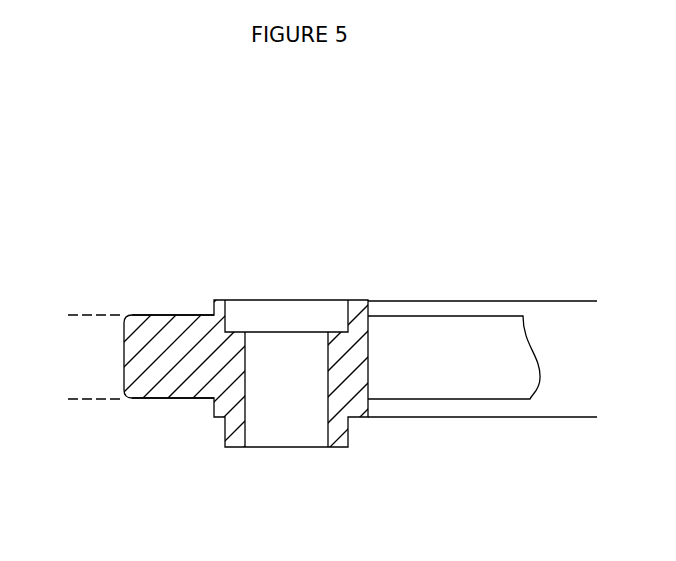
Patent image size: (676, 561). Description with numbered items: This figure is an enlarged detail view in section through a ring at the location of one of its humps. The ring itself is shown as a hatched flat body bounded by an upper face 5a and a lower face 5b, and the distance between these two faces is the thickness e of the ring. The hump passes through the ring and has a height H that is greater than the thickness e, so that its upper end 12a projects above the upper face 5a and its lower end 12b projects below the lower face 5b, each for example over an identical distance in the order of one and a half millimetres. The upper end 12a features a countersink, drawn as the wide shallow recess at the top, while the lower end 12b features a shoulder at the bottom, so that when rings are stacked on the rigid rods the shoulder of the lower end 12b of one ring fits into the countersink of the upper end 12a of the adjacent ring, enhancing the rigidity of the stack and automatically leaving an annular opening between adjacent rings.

The upper face 5a is at (170, 316).
The lower face 5b is at (172, 400).
The upper end 12a is at (305, 300).
The lower end 12b is at (303, 448).
The thickness e is at (73, 315).
The height H is at (592, 301).